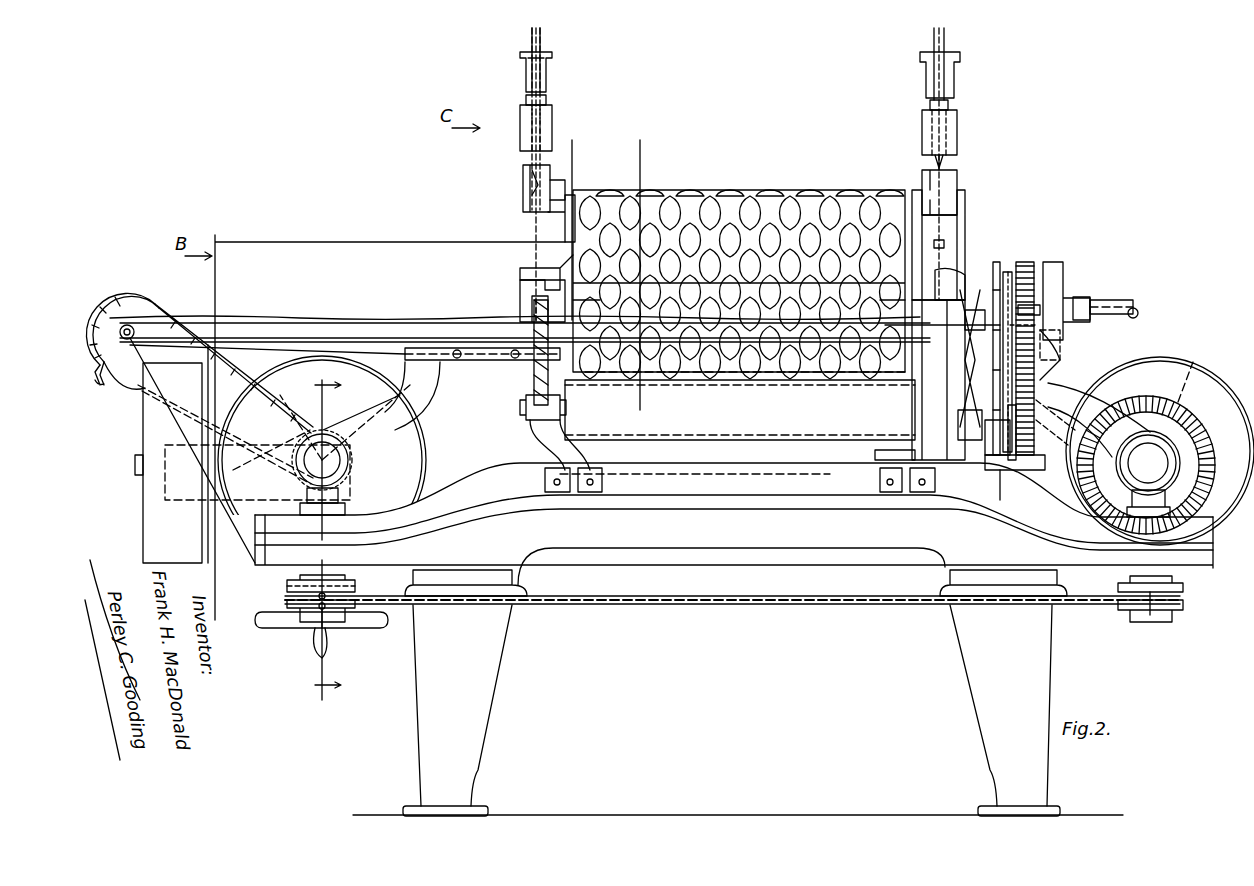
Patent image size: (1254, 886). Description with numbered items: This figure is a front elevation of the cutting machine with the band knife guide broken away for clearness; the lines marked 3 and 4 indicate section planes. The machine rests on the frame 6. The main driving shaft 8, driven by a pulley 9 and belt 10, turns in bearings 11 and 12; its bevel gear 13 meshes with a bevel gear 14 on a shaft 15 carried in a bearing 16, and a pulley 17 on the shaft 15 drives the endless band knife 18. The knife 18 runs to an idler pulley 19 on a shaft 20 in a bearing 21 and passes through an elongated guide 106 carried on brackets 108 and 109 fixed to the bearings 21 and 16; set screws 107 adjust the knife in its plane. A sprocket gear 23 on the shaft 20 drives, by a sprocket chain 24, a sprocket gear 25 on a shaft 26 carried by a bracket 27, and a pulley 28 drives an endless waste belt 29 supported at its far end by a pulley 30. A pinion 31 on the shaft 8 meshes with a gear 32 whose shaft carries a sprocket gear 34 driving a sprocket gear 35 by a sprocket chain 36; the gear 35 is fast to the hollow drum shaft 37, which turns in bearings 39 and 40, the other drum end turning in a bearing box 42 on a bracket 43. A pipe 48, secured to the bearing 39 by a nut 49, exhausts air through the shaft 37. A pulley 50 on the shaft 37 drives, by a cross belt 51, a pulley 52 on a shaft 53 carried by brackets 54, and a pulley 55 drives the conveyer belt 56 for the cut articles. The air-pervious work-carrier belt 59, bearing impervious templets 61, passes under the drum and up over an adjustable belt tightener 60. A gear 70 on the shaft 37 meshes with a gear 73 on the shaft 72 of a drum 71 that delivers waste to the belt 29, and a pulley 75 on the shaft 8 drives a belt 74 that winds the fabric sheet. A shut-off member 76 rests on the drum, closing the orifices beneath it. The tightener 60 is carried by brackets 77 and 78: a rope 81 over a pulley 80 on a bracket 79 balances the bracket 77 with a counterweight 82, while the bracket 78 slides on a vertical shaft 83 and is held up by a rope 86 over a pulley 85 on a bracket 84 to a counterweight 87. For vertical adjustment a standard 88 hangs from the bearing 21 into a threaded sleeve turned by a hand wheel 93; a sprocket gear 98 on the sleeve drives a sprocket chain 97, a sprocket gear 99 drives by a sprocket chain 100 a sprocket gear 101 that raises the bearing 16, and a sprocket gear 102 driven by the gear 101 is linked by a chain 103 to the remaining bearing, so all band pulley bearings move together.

The section line 3 is at (392, 375).
The section line 4 is at (639, 266).
The frame 6 is at (680, 620).
The main driving shaft 8 is at (135, 463).
The pulley 9 is at (143, 497).
The belt 10 is at (145, 430).
The bearing 11 is at (420, 430).
The bearing 12 is at (875, 455).
The bevel gear 13 is at (1080, 492).
The bevel gear 14 is at (1195, 371).
The shaft 15 is at (1152, 460).
The bearing 16 is at (1170, 472).
The pulley 17 is at (1228, 397).
The endless band knife 18 is at (1220, 382).
The idler pulley 19 is at (420, 435).
The shaft 20 is at (305, 440).
The bearing 21 is at (338, 470).
The sprocket gear 23 is at (300, 490).
The sprocket chain 24 is at (235, 320).
The sprocket gear 25 is at (120, 300).
The shaft 26 is at (133, 327).
The bracket 27 is at (140, 398).
The pulley 28 is at (117, 383).
The endless belt 29 is at (292, 318).
The pulley 30 is at (905, 345).
The pinion 31 is at (1018, 462).
The gear 32 is at (1060, 378).
The sprocket gear 34 is at (1040, 410).
The sprocket gear 35 is at (1000, 285).
The sprocket chain 36 is at (1032, 330).
The hollow shaft 37 is at (1010, 278).
The bearing 39 is at (1092, 295).
The bearing 40 is at (940, 305).
The bearing box 42 is at (520, 296).
The bracket 43 is at (532, 378).
The pipe 48 is at (1140, 311).
The nut 49 is at (1128, 290).
The pulley 50 is at (972, 300).
The cross belt 51 is at (970, 455).
The pulley 52 is at (998, 458).
The shaft 53 is at (526, 412).
The brackets 54 is at (595, 470).
The pulley 55 is at (565, 420).
The conveyer belt 56 is at (746, 418).
The endless belt 59 is at (580, 192).
The adjustable belt tightener 60 is at (565, 230).
The templets 61 is at (812, 205).
The gear 70 is at (1030, 262).
The drum 71 is at (845, 350).
The shaft 72 is at (573, 292).
The gear 73 is at (1062, 300).
The belt 74 is at (990, 470).
The pulley 75 is at (1005, 500).
The shut-off member 76 is at (528, 262).
The bracket 77 is at (523, 196).
The bracket 78 is at (957, 190).
The bracket 79 is at (552, 85).
The pulley 80 is at (545, 40).
The rope 81 is at (552, 112).
The counterweight 82 is at (520, 118).
The vertical shaft 83 is at (950, 165).
The bracket 84 is at (958, 84).
The pulley 85 is at (948, 42).
The rope 86 is at (948, 130).
The counterweight 87 is at (958, 115).
The vertical standard 88 is at (312, 514).
The hand wheel 93 is at (362, 620).
The sprocket chain 97 is at (356, 580).
The sprocket gear 98 is at (300, 583).
The sprocket gear 99 is at (315, 610).
The sprocket chain 100 is at (790, 606).
The sprocket gear 101 is at (1165, 610).
The sprocket gear 102 is at (1125, 588).
The chain 103 is at (1185, 586).
The elongated guide 106 is at (485, 362).
The set screws 107 is at (495, 340).
The bracket 108 is at (395, 398).
The bracket 109 is at (1110, 392).